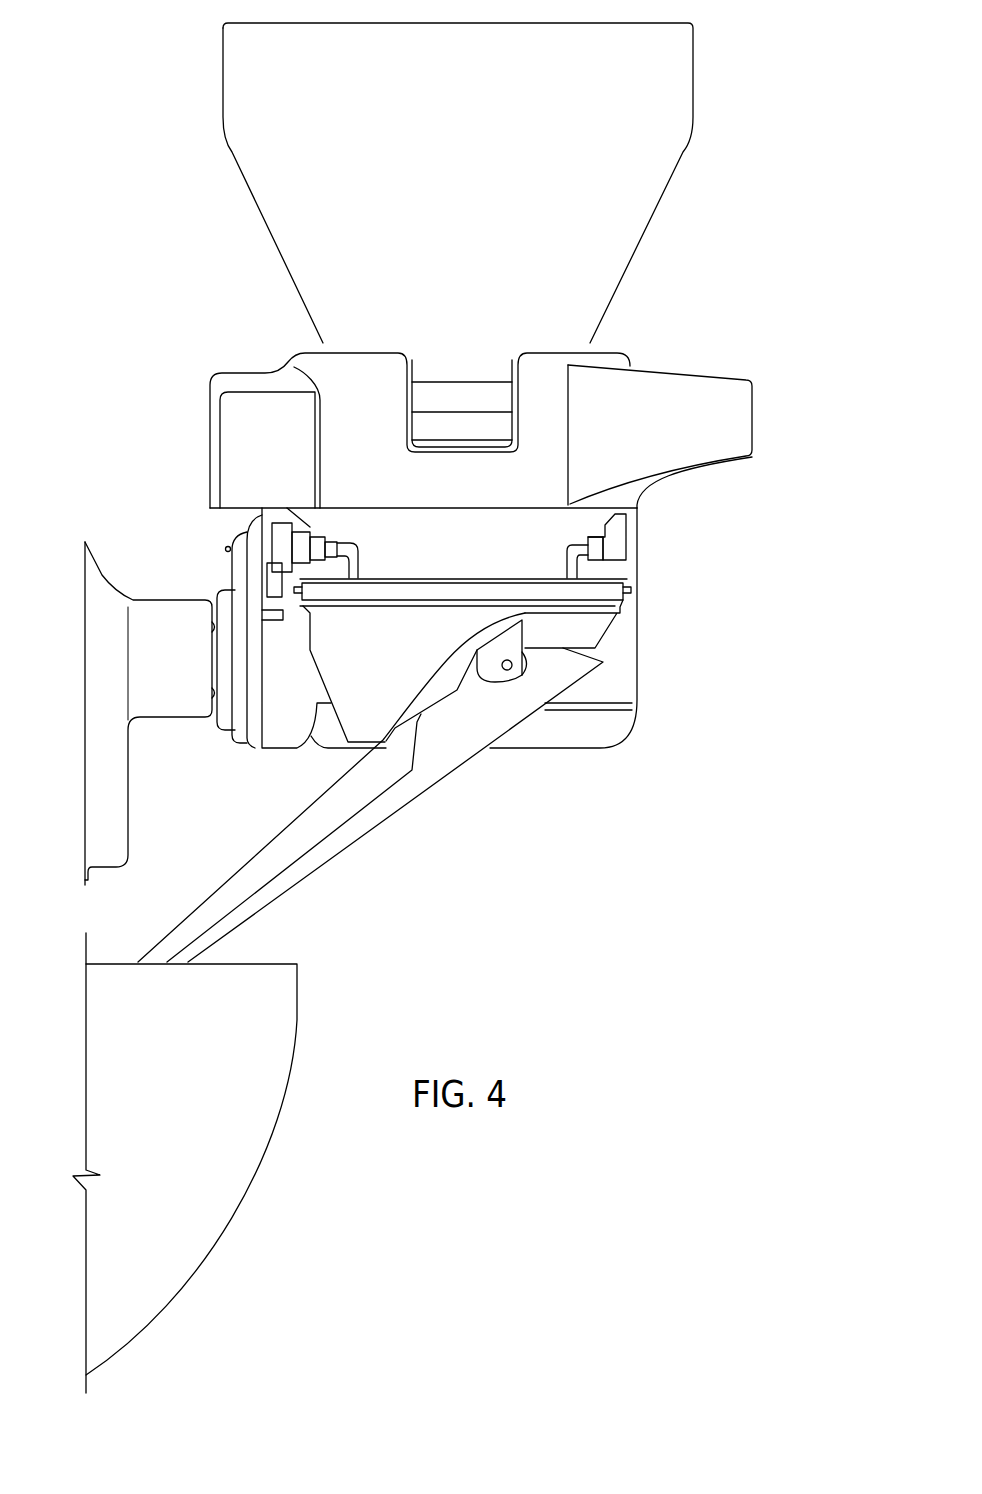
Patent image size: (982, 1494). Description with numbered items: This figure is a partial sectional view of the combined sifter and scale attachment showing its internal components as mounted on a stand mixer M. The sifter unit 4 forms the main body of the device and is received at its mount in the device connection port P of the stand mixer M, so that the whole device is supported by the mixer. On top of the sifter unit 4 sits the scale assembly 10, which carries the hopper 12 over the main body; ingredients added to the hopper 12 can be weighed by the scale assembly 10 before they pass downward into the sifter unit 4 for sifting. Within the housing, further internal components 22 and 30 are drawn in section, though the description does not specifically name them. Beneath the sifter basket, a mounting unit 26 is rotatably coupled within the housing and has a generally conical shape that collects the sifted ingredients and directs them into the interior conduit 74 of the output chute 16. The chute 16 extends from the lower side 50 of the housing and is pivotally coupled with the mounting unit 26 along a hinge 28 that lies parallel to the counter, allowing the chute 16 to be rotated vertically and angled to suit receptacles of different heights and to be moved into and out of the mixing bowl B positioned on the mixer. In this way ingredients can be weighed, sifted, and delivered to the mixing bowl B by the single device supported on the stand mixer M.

The sifter unit 4 is at (647, 548).
The scale assembly 10 is at (777, 443).
The hopper 12 is at (603, 280).
The output chute 16 is at (352, 837).
The actuator 22 is at (297, 505).
The mounting unit 26 is at (600, 620).
The hinge 28 is at (523, 675).
The link rod 30 is at (193, 948).
The lower side 50 is at (540, 732).
The conduit 74 is at (190, 897).
The stand mixer M is at (102, 590).
The device connection port P is at (168, 617).
The mixing bowl B is at (280, 997).